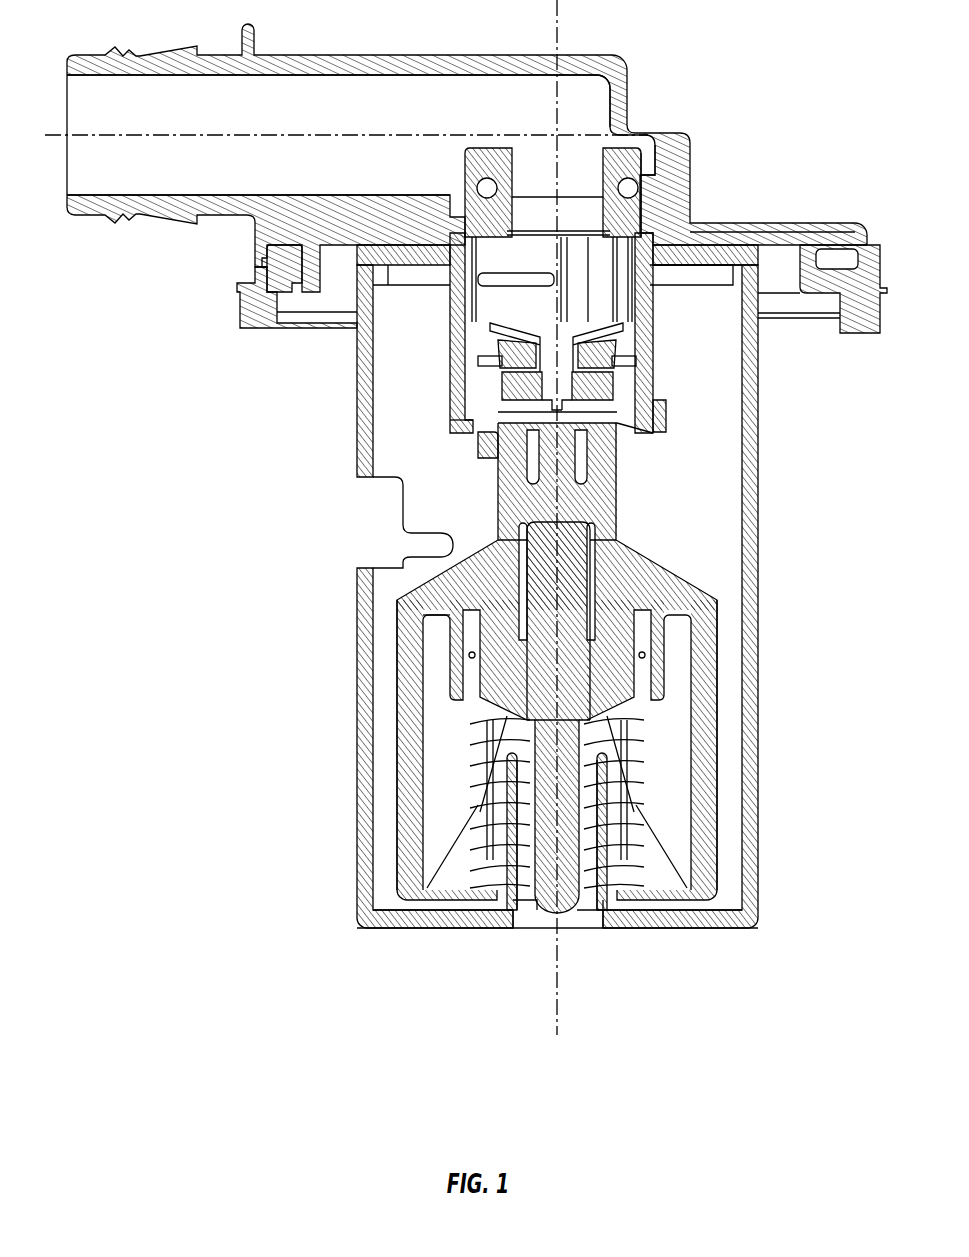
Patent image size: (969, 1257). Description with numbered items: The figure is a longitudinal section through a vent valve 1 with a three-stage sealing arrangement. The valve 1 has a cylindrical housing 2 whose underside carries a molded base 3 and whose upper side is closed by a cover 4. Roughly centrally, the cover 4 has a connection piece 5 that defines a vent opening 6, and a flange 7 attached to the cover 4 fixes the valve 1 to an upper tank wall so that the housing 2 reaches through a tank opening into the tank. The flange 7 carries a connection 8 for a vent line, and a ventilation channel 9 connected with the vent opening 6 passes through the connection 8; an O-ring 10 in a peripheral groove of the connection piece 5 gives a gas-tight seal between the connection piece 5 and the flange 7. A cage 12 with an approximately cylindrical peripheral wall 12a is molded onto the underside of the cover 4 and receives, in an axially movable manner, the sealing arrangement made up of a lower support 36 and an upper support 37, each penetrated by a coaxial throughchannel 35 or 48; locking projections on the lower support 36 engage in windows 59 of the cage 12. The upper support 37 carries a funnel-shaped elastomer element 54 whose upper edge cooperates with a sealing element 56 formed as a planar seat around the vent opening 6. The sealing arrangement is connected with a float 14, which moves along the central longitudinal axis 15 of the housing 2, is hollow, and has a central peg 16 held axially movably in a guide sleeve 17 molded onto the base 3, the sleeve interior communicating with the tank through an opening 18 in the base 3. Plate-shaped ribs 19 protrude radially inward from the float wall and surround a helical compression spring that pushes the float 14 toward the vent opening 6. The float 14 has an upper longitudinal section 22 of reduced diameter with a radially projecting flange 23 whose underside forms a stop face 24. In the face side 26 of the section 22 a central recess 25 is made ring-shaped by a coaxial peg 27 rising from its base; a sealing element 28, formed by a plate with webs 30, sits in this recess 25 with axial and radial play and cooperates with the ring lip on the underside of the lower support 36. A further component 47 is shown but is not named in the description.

The vent valve 1 is at (336, 835).
The housing 2 is at (750, 545).
The base 3 is at (665, 928).
The cover 4 is at (688, 257).
The connection piece 5 is at (645, 200).
The vent opening 6 is at (645, 150).
The flange 7 is at (255, 305).
The connection 8 is at (362, 68).
The ventilation channel 9 is at (412, 108).
The O-ring 10 is at (487, 178).
The cage 12 is at (447, 345).
The peripheral wall 12a is at (452, 362).
The float 14 is at (417, 660).
The central longitudinal axis 15 is at (557, 945).
The central peg 16 is at (560, 870).
The guide sleeve 17 is at (508, 900).
The opening 18 is at (530, 925).
The ribs 19 is at (668, 757).
The upper longitudinal section 22 is at (610, 478).
The flange 23 is at (490, 415).
The stop face 24 is at (495, 455).
The central recess 25 is at (580, 418).
The face side 26 is at (530, 470).
The peg 27 is at (560, 512).
The sealing element 28 is at (505, 520).
The webs 30 is at (583, 467).
The throughchannel 35 is at (503, 382).
The lower support 36 is at (498, 386).
The upper support 37 is at (644, 350).
The stop ring 47 is at (660, 397).
The throughchannel 48 is at (585, 340).
The elastomer element 54 is at (540, 347).
The sealing element 56 is at (556, 214).
The windows 59 is at (530, 303).